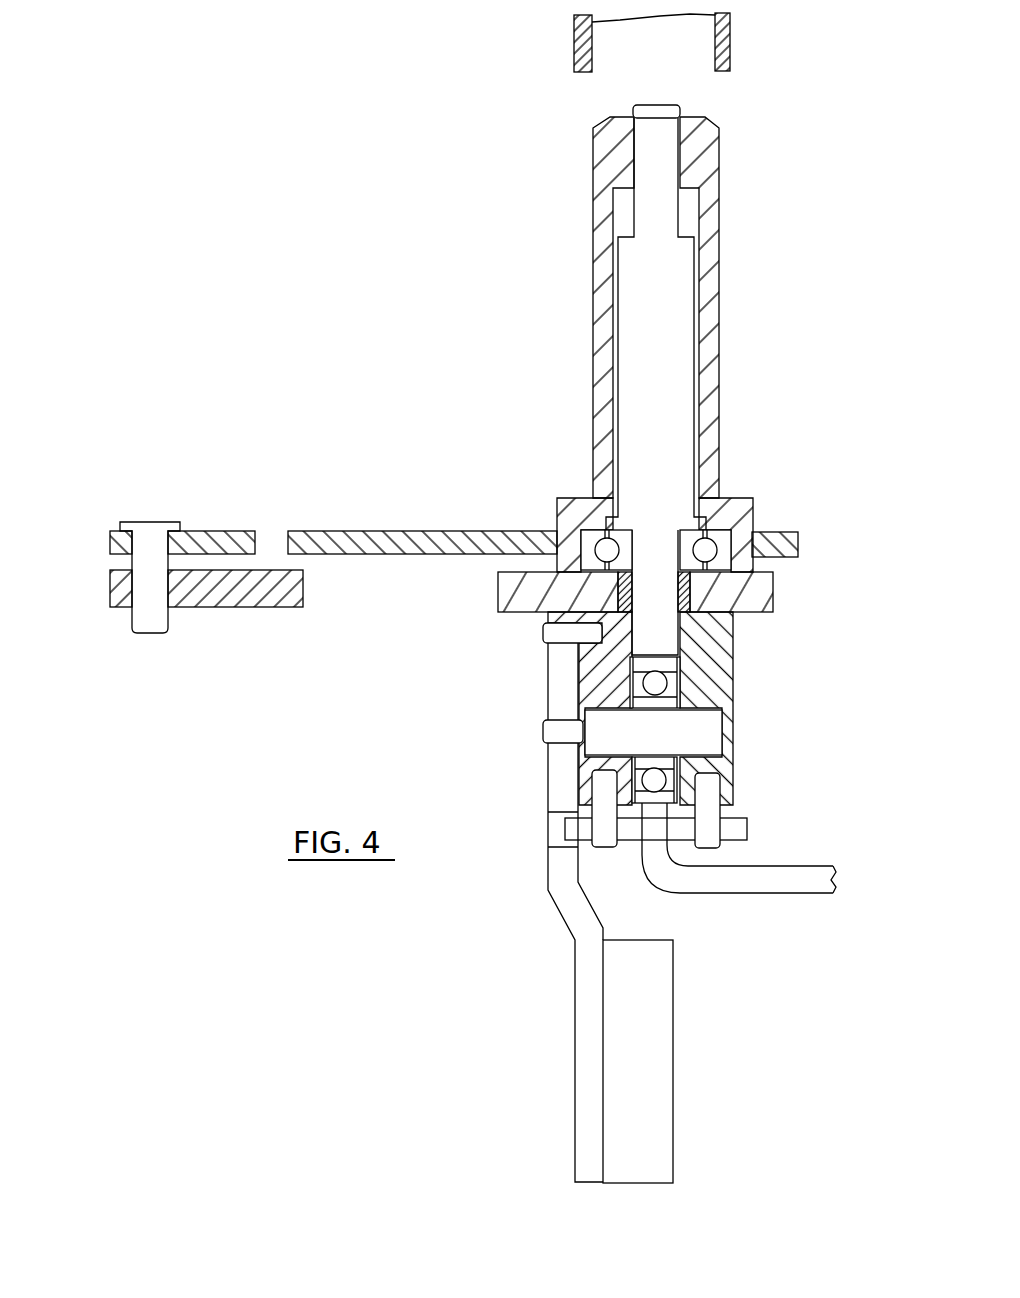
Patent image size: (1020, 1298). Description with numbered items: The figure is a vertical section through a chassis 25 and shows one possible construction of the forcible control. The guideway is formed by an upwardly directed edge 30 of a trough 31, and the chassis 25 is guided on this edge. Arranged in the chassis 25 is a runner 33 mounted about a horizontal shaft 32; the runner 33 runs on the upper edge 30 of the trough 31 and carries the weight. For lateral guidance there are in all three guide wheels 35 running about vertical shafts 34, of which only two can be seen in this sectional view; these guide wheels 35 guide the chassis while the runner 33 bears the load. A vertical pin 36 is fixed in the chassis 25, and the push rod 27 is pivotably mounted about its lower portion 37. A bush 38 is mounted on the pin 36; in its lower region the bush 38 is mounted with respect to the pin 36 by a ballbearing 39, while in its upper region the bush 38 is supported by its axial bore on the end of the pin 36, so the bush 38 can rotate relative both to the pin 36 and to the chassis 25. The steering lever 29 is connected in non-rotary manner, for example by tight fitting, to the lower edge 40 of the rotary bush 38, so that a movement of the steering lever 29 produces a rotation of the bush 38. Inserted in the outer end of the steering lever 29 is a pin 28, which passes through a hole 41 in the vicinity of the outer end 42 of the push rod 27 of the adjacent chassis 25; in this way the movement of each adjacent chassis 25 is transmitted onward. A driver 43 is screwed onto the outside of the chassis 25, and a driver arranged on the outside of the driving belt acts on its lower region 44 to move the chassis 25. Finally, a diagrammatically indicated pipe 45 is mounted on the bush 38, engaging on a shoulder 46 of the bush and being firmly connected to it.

The chassis 25 is at (493, 792).
The push rod 27 is at (247, 590).
The pin 28 is at (150, 547).
The steering lever 29 is at (337, 531).
The upwardly directed edge 30 is at (640, 842).
The trough 31 is at (763, 883).
The horizontal shaft 32 is at (690, 727).
The runner 33 is at (667, 668).
The vertical shafts 34 is at (705, 787).
The guide wheels 35 is at (733, 832).
The vertical pin 36 is at (667, 278).
The lower portion 37 is at (652, 618).
The bush 38 is at (597, 250).
The ballbearing 39 is at (590, 542).
The lower edge 40 is at (732, 552).
The hole 41 is at (150, 590).
The outer end 42 is at (110, 588).
The driver 43 is at (565, 887).
The lower region 44 is at (653, 1073).
The pipe 45 is at (573, 50).
The shoulder 46 is at (737, 498).